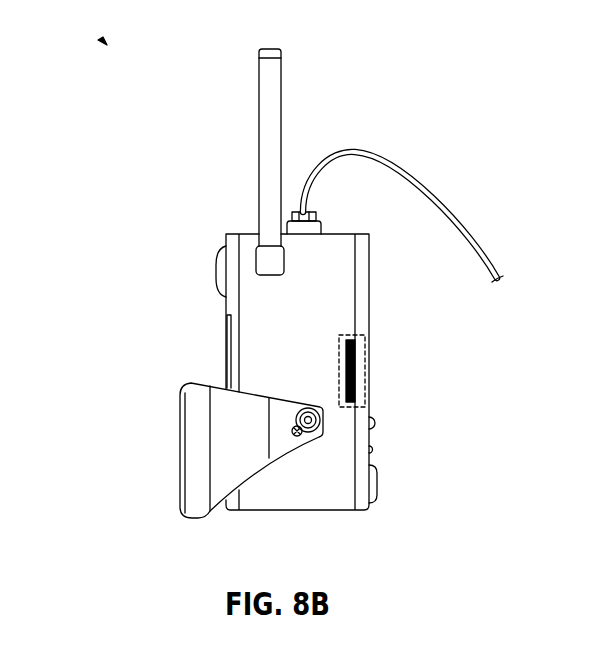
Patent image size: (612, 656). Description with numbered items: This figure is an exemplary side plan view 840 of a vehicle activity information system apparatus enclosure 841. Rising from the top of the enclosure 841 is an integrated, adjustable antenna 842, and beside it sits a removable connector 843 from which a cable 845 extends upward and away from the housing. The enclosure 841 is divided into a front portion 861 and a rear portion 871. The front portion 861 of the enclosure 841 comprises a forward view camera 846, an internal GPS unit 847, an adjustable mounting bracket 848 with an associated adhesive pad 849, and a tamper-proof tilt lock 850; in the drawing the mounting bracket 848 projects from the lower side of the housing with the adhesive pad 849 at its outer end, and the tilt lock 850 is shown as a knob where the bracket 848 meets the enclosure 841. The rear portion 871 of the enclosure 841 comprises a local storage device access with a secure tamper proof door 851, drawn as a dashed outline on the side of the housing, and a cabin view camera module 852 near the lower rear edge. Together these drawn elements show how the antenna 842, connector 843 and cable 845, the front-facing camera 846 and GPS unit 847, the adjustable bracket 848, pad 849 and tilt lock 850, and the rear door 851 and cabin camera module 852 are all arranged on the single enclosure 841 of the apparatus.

The side plan view 840 is at (103, 41).
The enclosure 841 is at (322, 512).
The adjustable antenna 842 is at (271, 47).
The removable connector 843 is at (323, 228).
The cable 845 is at (432, 183).
The forward view camera 846 is at (217, 272).
The internal GPS unit 847 is at (227, 330).
The adjustable mounting bracket 848 is at (193, 522).
The adhesive pad 849 is at (179, 453).
The tamper-proof tilt lock 850 is at (298, 437).
The secure tamper proof door 851 is at (352, 358).
The cabin view camera module 852 is at (378, 487).
The front portion 861 is at (227, 374).
The rear portion 871 is at (372, 282).